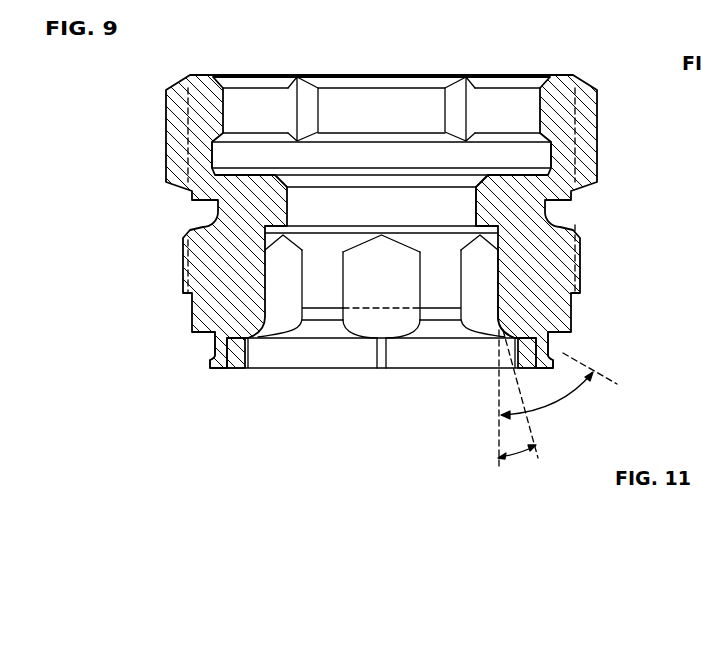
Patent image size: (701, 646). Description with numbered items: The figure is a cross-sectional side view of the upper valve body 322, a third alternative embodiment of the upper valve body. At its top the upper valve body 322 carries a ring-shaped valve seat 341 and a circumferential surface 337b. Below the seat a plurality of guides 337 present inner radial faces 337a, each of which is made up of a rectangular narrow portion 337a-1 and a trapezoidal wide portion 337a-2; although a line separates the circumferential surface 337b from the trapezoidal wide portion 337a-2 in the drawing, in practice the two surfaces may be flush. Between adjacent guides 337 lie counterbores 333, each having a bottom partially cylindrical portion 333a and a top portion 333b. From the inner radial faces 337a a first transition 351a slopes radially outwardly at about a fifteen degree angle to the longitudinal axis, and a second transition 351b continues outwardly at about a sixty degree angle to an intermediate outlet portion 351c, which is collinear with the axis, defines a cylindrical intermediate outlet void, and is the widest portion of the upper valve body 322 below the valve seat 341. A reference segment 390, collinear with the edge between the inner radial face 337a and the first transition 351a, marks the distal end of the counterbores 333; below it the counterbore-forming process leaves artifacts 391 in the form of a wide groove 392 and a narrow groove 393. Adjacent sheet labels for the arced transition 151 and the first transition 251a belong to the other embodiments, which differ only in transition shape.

The upper valve body 322 is at (146, 152).
The counterbores 333 is at (363, 288).
The bottom partially cylindrical portion 333a is at (363, 272).
The top portion 333b is at (378, 238).
The guides 337 is at (376, 240).
The inner radial faces 337a is at (376, 240).
The rectangular narrow portion 337a-1 is at (440, 283).
The trapezoidal wide portion 337a-2 is at (430, 226).
The circumferential surface 337b is at (447, 243).
The valve seat 341 is at (478, 224).
The first transition 351a is at (502, 309).
The second transition 351b is at (525, 337).
The intermediate outlet portion 351c is at (548, 362).
The reference segment 390 is at (364, 217).
The artifacts 391 is at (395, 348).
The wide groove 392 is at (410, 332).
The narrow groove 393 is at (380, 367).
The transition 151 is at (163, 10).
The first transition 251a is at (577, 0).